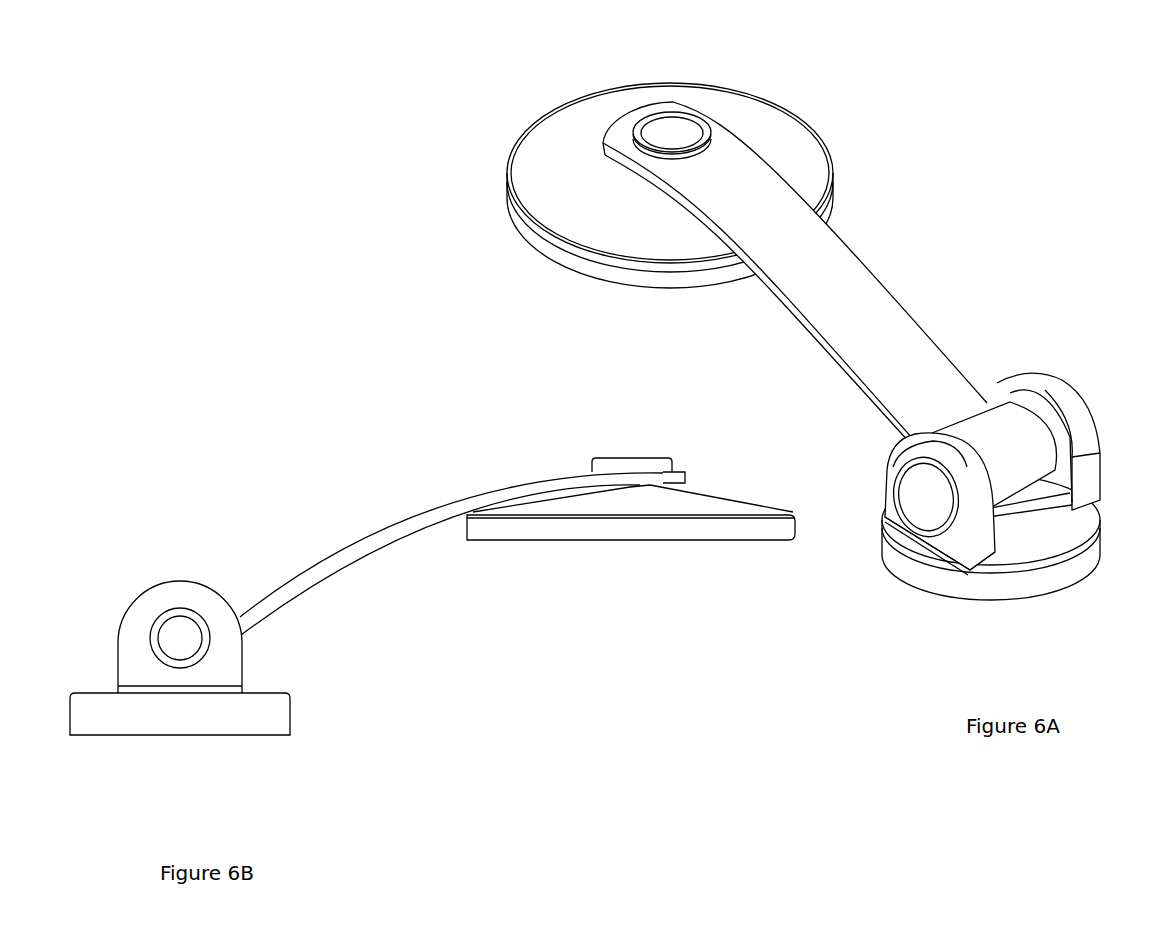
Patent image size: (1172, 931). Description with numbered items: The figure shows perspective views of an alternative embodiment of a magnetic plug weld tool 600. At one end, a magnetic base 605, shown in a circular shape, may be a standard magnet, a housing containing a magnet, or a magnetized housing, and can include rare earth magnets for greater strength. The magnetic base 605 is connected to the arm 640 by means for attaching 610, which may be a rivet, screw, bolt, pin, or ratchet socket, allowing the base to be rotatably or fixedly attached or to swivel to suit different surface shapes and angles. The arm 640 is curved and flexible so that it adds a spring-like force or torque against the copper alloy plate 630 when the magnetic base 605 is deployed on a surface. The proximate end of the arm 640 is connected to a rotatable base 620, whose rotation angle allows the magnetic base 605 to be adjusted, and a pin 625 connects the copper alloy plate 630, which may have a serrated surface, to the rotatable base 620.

In FIG. 6A, the magnetic plug weld tool 600 is at (1058, 91).
In FIG. 6B, the magnetic plug weld tool 600 is at (130, 353).
In FIG. 6A, the magnetic base 605 is at (540, 168).
In FIG. 6A, the means for attaching 610 is at (682, 123).
In FIG. 6A, the rotatable base 620 is at (1023, 418).
In FIG. 6A, the pin 625 is at (940, 522).
In FIG. 6B, the copper alloy plate 630 is at (247, 745).
In FIG. 6A, the arm 640 is at (905, 257).
In FIG. 6B, the arm 640 is at (420, 505).